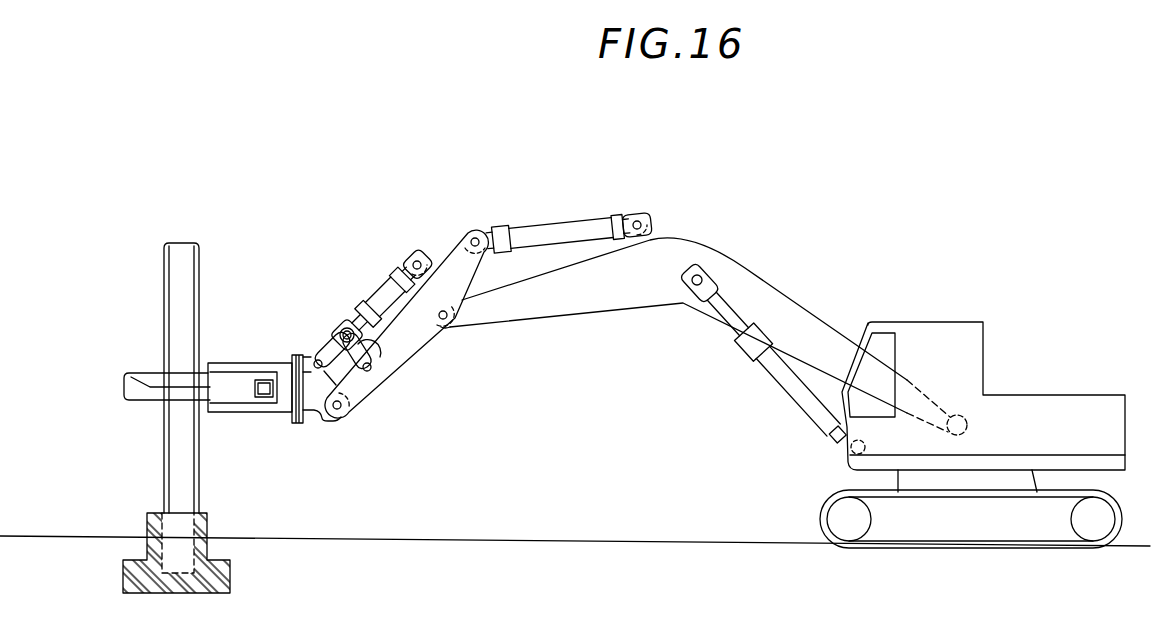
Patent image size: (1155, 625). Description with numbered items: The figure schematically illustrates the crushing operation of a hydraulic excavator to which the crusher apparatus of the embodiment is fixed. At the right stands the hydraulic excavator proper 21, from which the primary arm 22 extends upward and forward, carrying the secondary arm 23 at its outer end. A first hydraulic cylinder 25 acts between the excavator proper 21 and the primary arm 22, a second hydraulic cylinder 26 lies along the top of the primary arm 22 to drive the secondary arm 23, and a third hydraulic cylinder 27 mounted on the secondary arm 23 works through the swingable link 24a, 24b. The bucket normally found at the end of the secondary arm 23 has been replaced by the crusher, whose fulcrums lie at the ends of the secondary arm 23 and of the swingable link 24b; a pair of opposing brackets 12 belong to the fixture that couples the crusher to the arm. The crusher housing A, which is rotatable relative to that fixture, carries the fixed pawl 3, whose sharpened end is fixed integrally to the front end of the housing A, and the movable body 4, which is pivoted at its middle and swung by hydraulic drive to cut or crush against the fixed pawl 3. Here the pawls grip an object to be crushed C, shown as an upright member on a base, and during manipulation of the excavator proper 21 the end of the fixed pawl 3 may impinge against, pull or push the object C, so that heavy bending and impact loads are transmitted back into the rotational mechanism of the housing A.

The object to be crushed C is at (200, 291).
The housing A is at (240, 364).
The fixed pawl 3 is at (233, 413).
The movable body 4 is at (142, 401).
The bracket 12 is at (313, 417).
The hydraulic excavator proper 21 is at (984, 335).
The primary arm 22 is at (750, 270).
The secondary arm 23 is at (450, 252).
The swingable link 24a is at (388, 359).
The swingable link 24b is at (323, 347).
The first hydraulic cylinder 25 is at (783, 388).
The second hydraulic cylinder 26 is at (560, 226).
The third hydraulic cylinder 27 is at (375, 292).